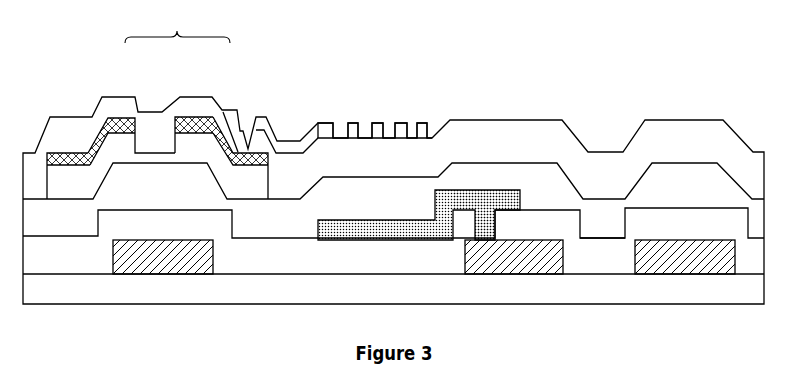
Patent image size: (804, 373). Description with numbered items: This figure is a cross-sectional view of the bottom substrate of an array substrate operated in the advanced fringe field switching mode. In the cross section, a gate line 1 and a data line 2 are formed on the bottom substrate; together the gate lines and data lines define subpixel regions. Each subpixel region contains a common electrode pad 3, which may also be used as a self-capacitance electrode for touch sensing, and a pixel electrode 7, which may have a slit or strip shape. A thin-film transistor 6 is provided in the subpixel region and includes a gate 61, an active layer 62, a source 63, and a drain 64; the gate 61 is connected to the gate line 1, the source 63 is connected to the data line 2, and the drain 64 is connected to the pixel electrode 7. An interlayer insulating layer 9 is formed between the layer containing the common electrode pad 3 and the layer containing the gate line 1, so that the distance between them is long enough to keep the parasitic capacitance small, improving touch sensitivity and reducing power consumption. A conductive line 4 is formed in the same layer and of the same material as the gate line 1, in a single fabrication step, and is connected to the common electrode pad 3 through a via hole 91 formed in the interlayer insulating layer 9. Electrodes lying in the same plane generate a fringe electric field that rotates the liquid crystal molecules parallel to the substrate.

The gate line 1 is at (692, 252).
The data line 2 is at (68, 157).
The common electrode pad 3 is at (452, 204).
The conductive line 4 is at (528, 252).
The thin-film transistor 6 is at (177, 25).
The gate 61 is at (137, 253).
The active layer 62 is at (181, 150).
The source 63 is at (112, 118).
The drain 64 is at (219, 109).
The pixel electrode 7 is at (318, 122).
The interlayer insulating layer 9 is at (603, 252).
The via hole 91 is at (480, 210).